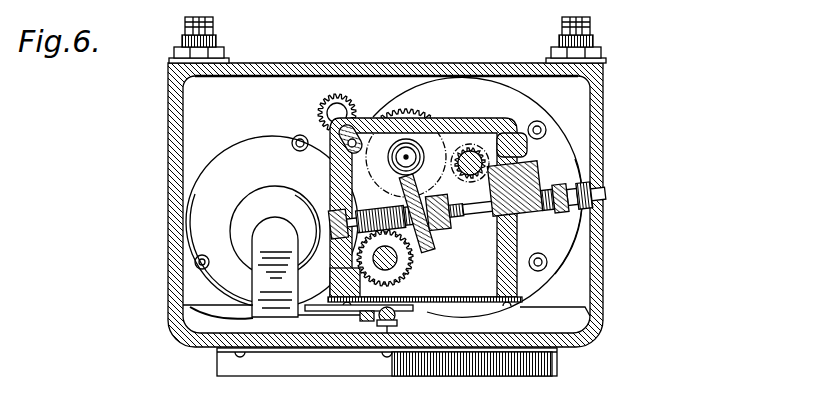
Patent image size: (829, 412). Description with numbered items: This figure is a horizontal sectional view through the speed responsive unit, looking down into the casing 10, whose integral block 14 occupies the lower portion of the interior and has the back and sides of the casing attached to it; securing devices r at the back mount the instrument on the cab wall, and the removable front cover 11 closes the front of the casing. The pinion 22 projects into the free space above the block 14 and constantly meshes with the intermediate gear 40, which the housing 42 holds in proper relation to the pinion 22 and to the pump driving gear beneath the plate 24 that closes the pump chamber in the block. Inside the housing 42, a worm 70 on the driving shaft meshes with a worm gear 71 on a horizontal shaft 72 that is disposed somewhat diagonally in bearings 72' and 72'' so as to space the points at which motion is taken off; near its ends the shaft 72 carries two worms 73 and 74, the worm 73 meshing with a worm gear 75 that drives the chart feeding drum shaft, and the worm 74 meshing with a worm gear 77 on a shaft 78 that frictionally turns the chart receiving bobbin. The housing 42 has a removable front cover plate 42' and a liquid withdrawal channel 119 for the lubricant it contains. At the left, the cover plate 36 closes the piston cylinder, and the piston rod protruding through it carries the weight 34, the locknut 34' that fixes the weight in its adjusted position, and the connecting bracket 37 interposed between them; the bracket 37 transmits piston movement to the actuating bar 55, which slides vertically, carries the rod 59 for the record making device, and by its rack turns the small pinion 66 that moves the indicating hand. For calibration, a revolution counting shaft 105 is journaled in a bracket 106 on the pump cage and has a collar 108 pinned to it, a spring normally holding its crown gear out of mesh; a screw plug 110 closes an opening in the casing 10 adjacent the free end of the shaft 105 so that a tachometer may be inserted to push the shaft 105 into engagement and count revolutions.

The casing 10 is at (297, 64).
The front cover 11 is at (181, 335).
The block 14 is at (192, 123).
The pinion 22 is at (343, 96).
The plate 24 is at (575, 279).
The weight 34 is at (223, 231).
The locknut 34' is at (253, 209).
The cover plate 36 is at (188, 197).
The connecting bracket 37 is at (255, 288).
The intermediate gear 40 is at (407, 140).
The housing 42 is at (483, 177).
The front cover plate 42' is at (425, 353).
The actuating bar 55 is at (343, 308).
The rod 59 is at (385, 316).
The pinion 66 is at (414, 322).
The worm 70 is at (410, 104).
The worm gear 71 is at (427, 254).
The horizontal shaft 72 is at (462, 220).
The bearing 72' is at (318, 205).
The bearing 72'' is at (566, 182).
The worm 73 is at (360, 204).
The worm 74 is at (481, 212).
The worm gear 75 is at (347, 258).
The worm gear 77 is at (470, 152).
The shaft 78 is at (474, 160).
The revolution counting shaft 105 is at (592, 176).
The bracket 106 is at (535, 240).
The collar 108 is at (545, 220).
The screw plug 110 is at (607, 194).
The withdrawal channel 119 is at (353, 142).
The securing devices r is at (214, 33).